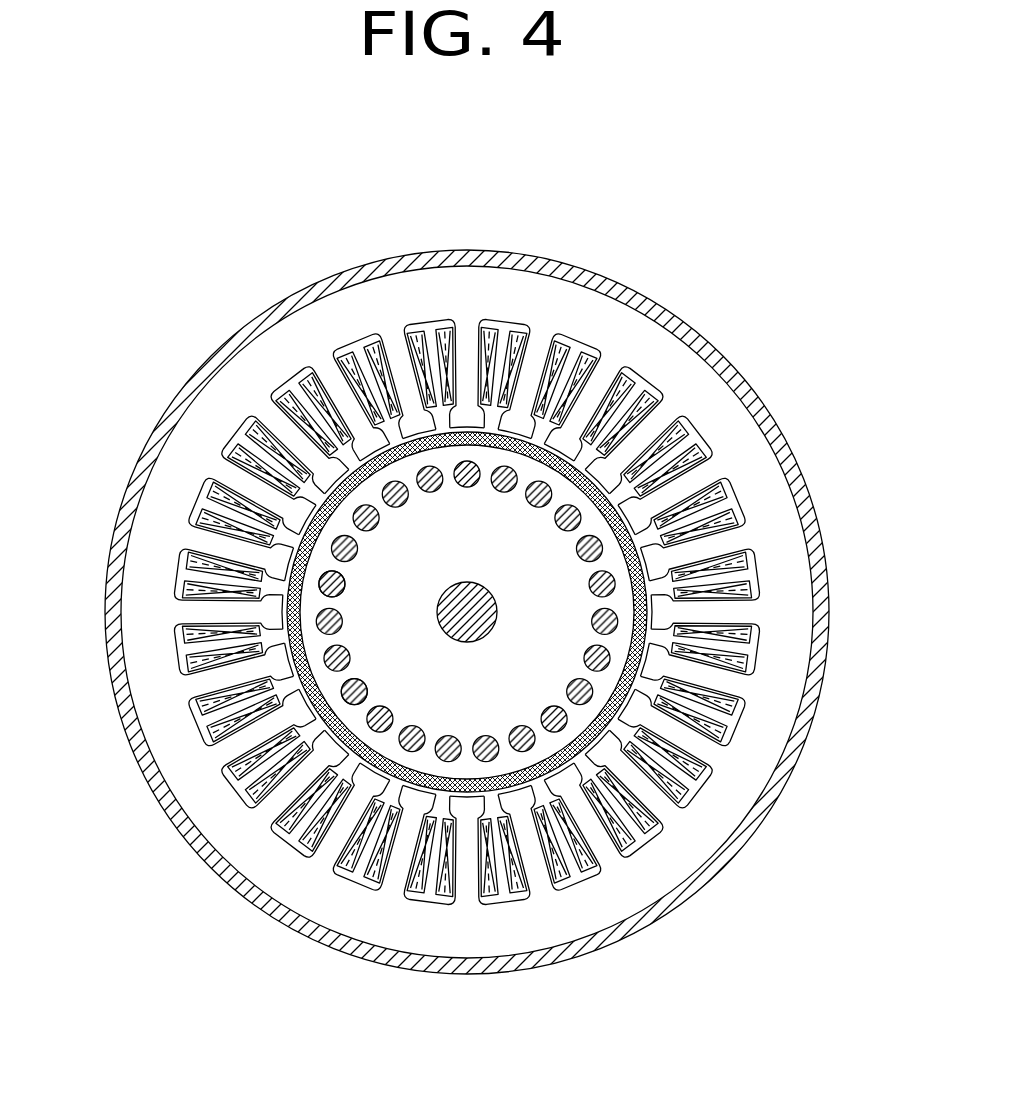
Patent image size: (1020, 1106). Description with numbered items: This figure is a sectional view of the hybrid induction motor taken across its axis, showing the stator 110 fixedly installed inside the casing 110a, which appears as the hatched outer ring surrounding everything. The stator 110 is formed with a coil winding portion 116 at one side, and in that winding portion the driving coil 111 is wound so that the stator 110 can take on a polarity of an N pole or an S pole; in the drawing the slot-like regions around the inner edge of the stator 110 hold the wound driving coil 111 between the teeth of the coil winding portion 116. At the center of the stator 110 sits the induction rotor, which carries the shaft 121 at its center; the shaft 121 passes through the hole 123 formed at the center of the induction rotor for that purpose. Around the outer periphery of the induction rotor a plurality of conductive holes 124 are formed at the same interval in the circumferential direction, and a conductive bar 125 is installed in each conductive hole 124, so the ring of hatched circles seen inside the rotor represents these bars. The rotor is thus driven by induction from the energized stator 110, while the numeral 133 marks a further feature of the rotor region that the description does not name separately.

The stator 110 is at (168, 471).
The casing 110a is at (410, 954).
The driving coil 111 is at (277, 604).
The coil winding portion 116 is at (538, 873).
The shaft 121 is at (441, 620).
The hole 123 is at (441, 620).
The conductive hole 124 is at (413, 740).
The conductive bar 125 is at (323, 581).
The rotor bar 133 is at (347, 695).